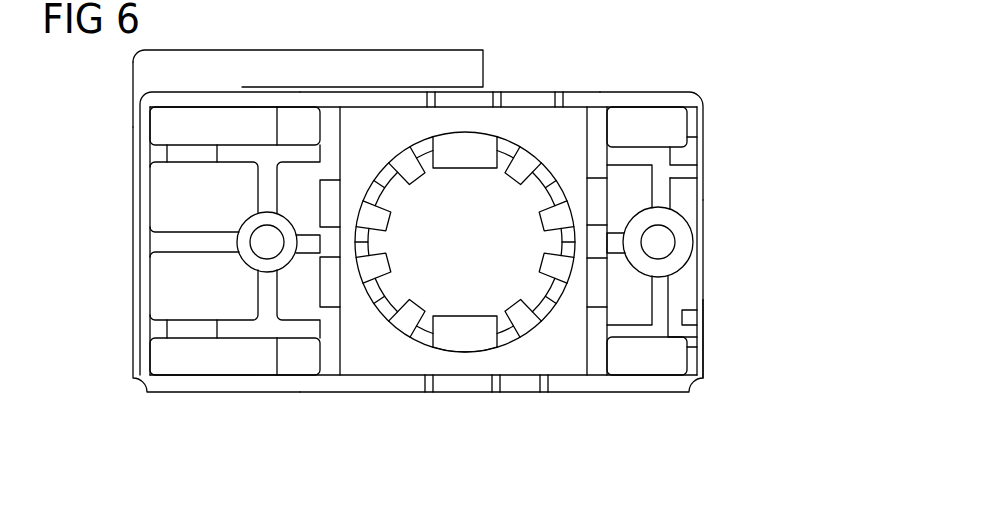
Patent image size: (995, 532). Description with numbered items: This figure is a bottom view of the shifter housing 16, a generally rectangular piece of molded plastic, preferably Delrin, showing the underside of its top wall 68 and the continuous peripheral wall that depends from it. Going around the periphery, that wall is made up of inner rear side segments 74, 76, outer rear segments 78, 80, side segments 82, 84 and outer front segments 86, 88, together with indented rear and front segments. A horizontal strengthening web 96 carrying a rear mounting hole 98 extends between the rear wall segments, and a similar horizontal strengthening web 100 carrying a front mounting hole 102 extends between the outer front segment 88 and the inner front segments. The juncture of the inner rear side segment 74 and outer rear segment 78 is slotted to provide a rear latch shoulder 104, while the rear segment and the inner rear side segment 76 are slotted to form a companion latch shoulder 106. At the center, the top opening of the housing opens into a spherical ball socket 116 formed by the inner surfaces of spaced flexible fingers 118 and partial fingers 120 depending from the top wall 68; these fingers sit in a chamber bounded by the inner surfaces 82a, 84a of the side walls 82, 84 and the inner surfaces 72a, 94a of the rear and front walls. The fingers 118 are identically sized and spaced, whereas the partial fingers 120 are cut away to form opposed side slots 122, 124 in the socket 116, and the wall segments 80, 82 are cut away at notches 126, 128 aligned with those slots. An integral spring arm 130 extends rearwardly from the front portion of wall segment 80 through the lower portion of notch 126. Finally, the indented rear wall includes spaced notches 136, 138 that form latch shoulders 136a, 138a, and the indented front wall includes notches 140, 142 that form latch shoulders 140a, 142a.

The shifter housing 16 is at (728, 88).
The top wall 68 is at (400, 363).
The inner surface of rear wall 72a is at (587, 353).
The inner rear side segment 74 is at (685, 165).
The inner rear side segment 76 is at (688, 317).
The outer rear segment 78 is at (707, 112).
The outer rear segment 80 is at (707, 370).
The side segment 82 is at (670, 92).
The inner surface of side wall 82a is at (362, 113).
The side segment 84 is at (260, 392).
The inner surface of side wall 84a is at (551, 373).
The outer front segment 86 is at (133, 127).
The outer front segment 88 is at (133, 353).
The inner surface of front wall 94a is at (341, 340).
The horizontal strengthening web 96 is at (693, 192).
The rear mounting hole 98 is at (663, 246).
The horizontal strengthening web 100 is at (160, 208).
The front mounting hole 102 is at (258, 238).
The rear latch shoulder 104 is at (697, 147).
The companion latch shoulder 106 is at (690, 341).
The spherical ball socket 116 is at (497, 193).
The flexible fingers 118 is at (542, 263).
The partial fingers 120 is at (433, 168).
The side slot 122 is at (493, 167).
The side slot 124 is at (488, 348).
The notch 126 is at (552, 92).
The notch 128 is at (490, 385).
The integral spring arm 130 is at (271, 73).
The notch 136 is at (620, 297).
The latch shoulder 136a is at (612, 288).
The notch 138 is at (584, 181).
The latch shoulder 138a is at (605, 222).
The notch 140 is at (323, 303).
The latch shoulder 140a is at (330, 287).
The notch 142 is at (337, 213).
The latch shoulder 142a is at (333, 197).